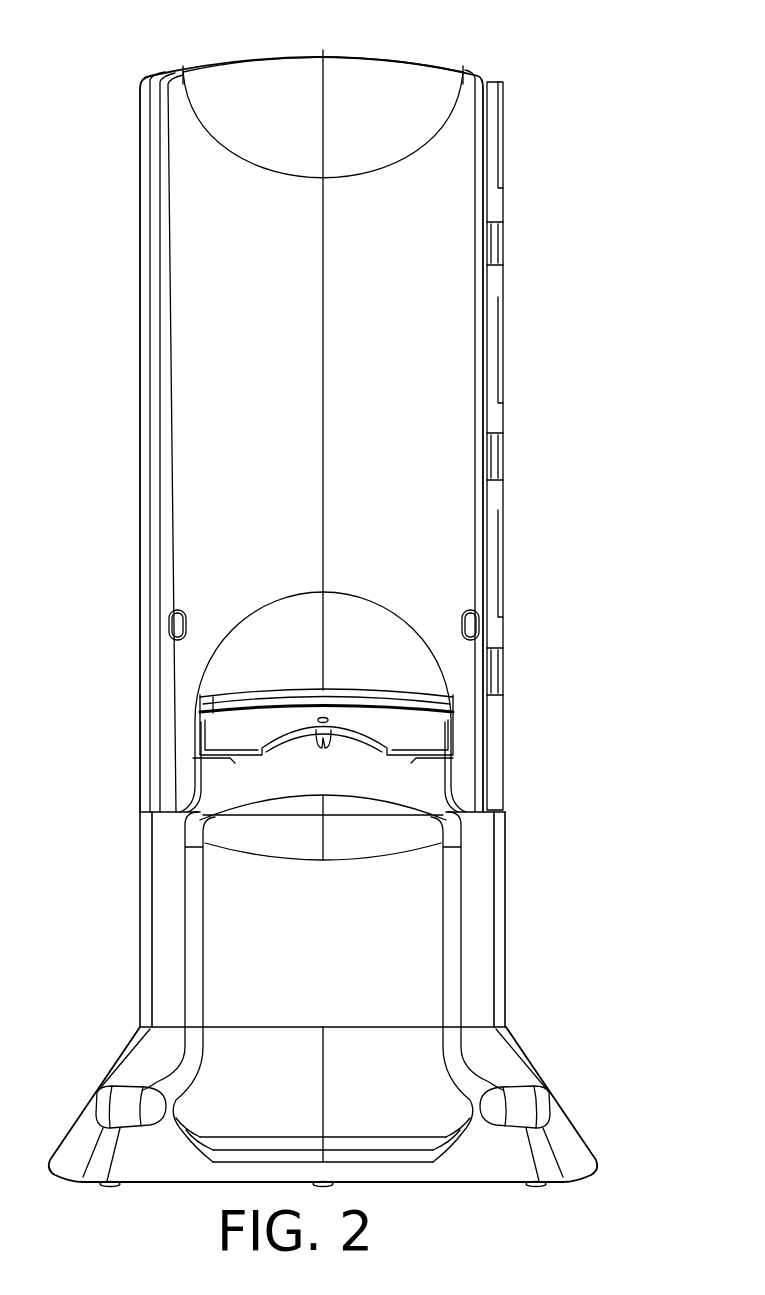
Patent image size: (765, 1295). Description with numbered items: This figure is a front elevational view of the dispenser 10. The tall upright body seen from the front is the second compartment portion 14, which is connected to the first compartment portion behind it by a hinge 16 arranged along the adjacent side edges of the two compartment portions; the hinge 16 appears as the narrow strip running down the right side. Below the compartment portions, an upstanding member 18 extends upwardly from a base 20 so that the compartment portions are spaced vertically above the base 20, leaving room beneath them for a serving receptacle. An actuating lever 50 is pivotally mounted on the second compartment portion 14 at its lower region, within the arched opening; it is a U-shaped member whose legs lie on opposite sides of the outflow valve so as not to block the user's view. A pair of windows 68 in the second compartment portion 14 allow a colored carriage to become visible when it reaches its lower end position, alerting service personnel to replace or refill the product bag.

The dispenser 10 is at (541, 106).
The second compartment portion 14 is at (393, 323).
The hinge 16 is at (493, 453).
The upstanding member 18 is at (507, 833).
The base 20 is at (513, 1070).
The actuating lever 50 is at (247, 705).
The window 68 is at (180, 611).